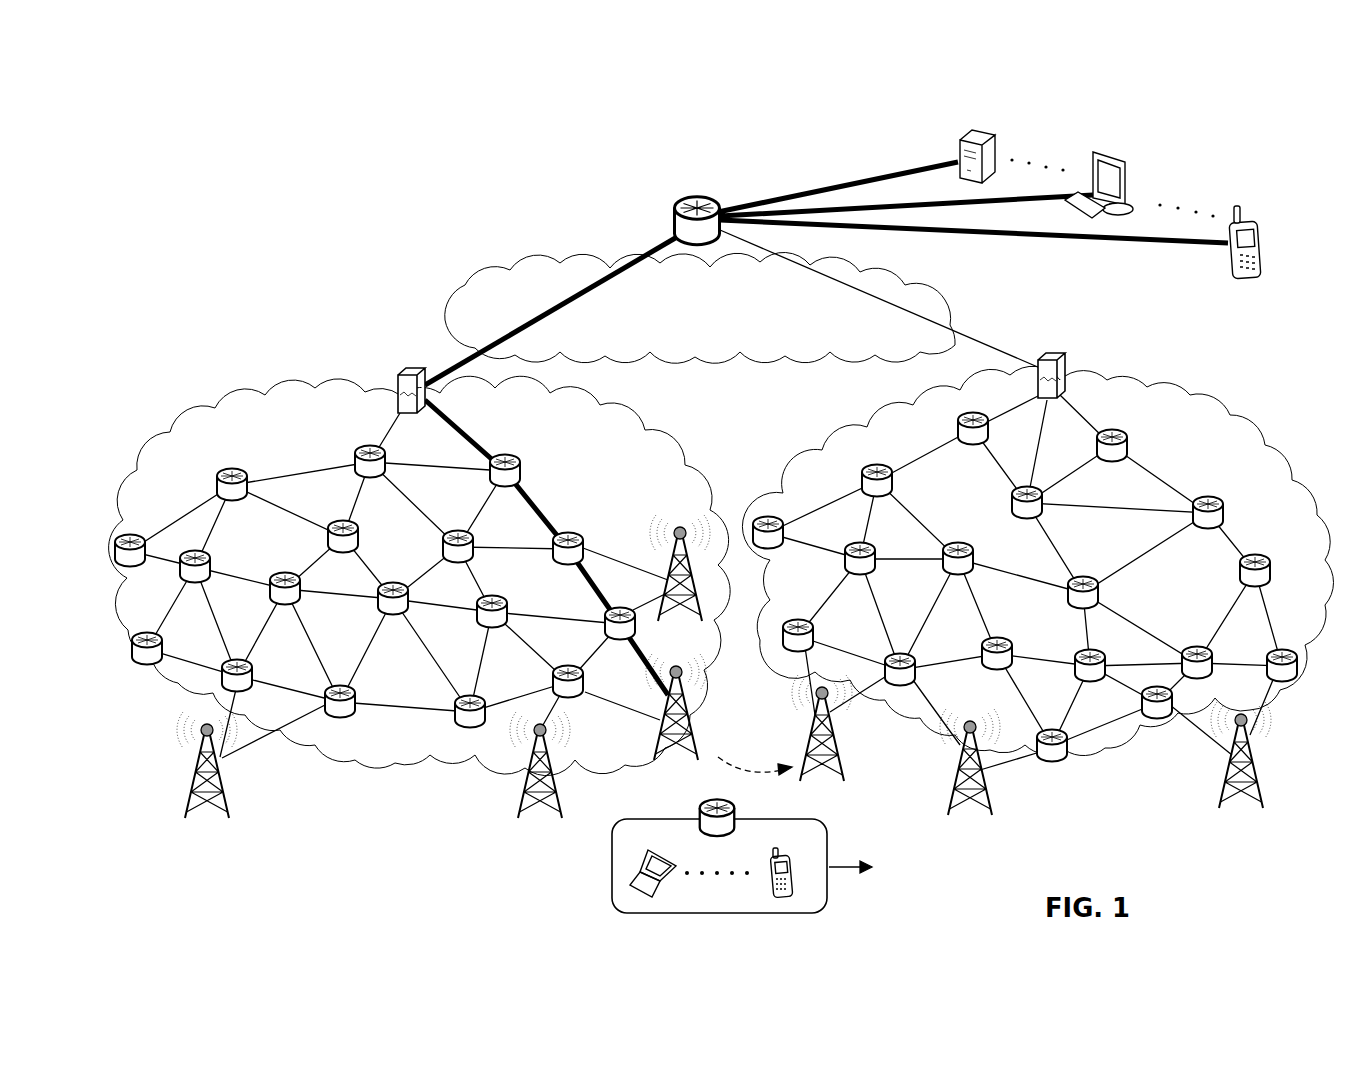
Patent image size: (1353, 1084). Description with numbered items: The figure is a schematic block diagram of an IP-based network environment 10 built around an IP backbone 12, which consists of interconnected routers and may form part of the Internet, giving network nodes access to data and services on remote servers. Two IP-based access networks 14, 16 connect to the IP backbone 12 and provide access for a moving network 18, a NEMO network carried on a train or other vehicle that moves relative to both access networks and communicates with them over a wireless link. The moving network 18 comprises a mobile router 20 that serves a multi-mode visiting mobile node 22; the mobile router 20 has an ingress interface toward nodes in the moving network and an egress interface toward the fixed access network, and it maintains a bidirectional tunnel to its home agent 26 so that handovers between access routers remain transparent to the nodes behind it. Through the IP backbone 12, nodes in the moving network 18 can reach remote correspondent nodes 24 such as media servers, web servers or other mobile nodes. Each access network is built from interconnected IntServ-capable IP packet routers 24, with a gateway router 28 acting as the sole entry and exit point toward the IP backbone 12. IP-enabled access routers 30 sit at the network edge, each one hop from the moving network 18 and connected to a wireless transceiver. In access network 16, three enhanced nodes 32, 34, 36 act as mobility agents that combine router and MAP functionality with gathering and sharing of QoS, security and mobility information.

The network environment 10 is at (322, 260).
The IP backbone 12 is at (510, 278).
The access network 14 is at (355, 390).
The access network 16 is at (1037, 606).
The moving network 18 is at (726, 849).
The mobile router 20 is at (737, 807).
The visiting mobile node 22 is at (647, 858).
The correspondent node / IP packet router 24 is at (993, 133).
The home agent 26 is at (705, 195).
The gateway router 28 is at (1066, 370).
The access router 30 is at (953, 795).
The enhanced node 32 is at (879, 460).
The enhanced node 34 is at (1103, 575).
The enhanced node 36 is at (1127, 428).